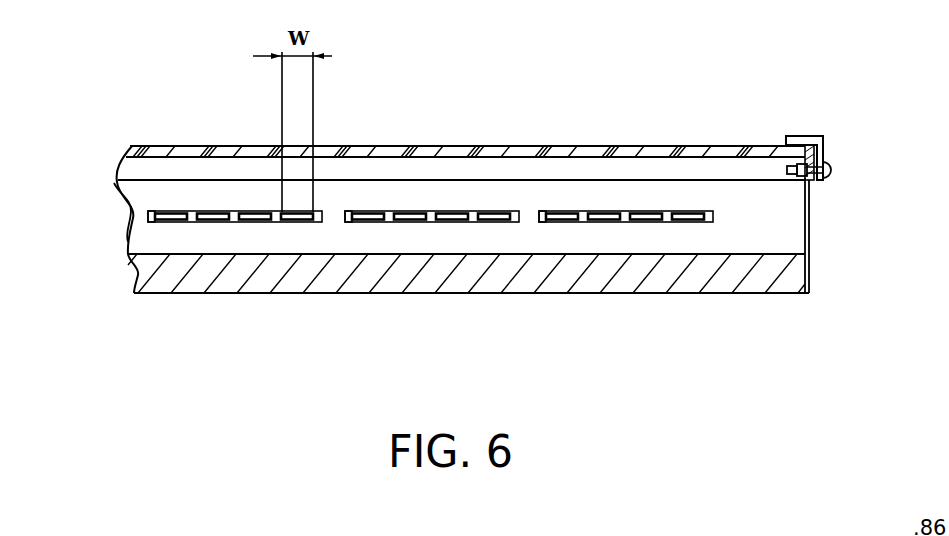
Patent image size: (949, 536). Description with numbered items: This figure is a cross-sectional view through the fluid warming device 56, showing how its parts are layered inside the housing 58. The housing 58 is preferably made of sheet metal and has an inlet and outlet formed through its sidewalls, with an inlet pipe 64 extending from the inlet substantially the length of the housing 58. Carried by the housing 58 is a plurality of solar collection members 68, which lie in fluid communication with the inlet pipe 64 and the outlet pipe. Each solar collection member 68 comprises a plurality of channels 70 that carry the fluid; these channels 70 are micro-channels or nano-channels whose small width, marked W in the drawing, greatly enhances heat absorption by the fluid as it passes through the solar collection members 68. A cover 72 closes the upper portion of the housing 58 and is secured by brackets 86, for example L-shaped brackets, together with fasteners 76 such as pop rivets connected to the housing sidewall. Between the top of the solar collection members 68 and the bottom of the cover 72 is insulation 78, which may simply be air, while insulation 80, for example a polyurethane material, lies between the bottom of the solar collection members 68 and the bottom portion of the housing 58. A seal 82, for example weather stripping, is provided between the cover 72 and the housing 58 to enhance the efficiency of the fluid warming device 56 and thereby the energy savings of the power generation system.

The fluid warming device 56 is at (486, 74).
The housing 58 is at (810, 291).
The inlet pipe 64 is at (138, 199).
The solar collection members 68 is at (150, 223).
The channels 70 is at (206, 223).
The cover 72 is at (553, 146).
The fasteners 76 is at (838, 170).
The insulation 78 is at (640, 171).
The insulation 80 is at (671, 284).
The seal 82 is at (810, 181).
The brackets 86 is at (788, 136).